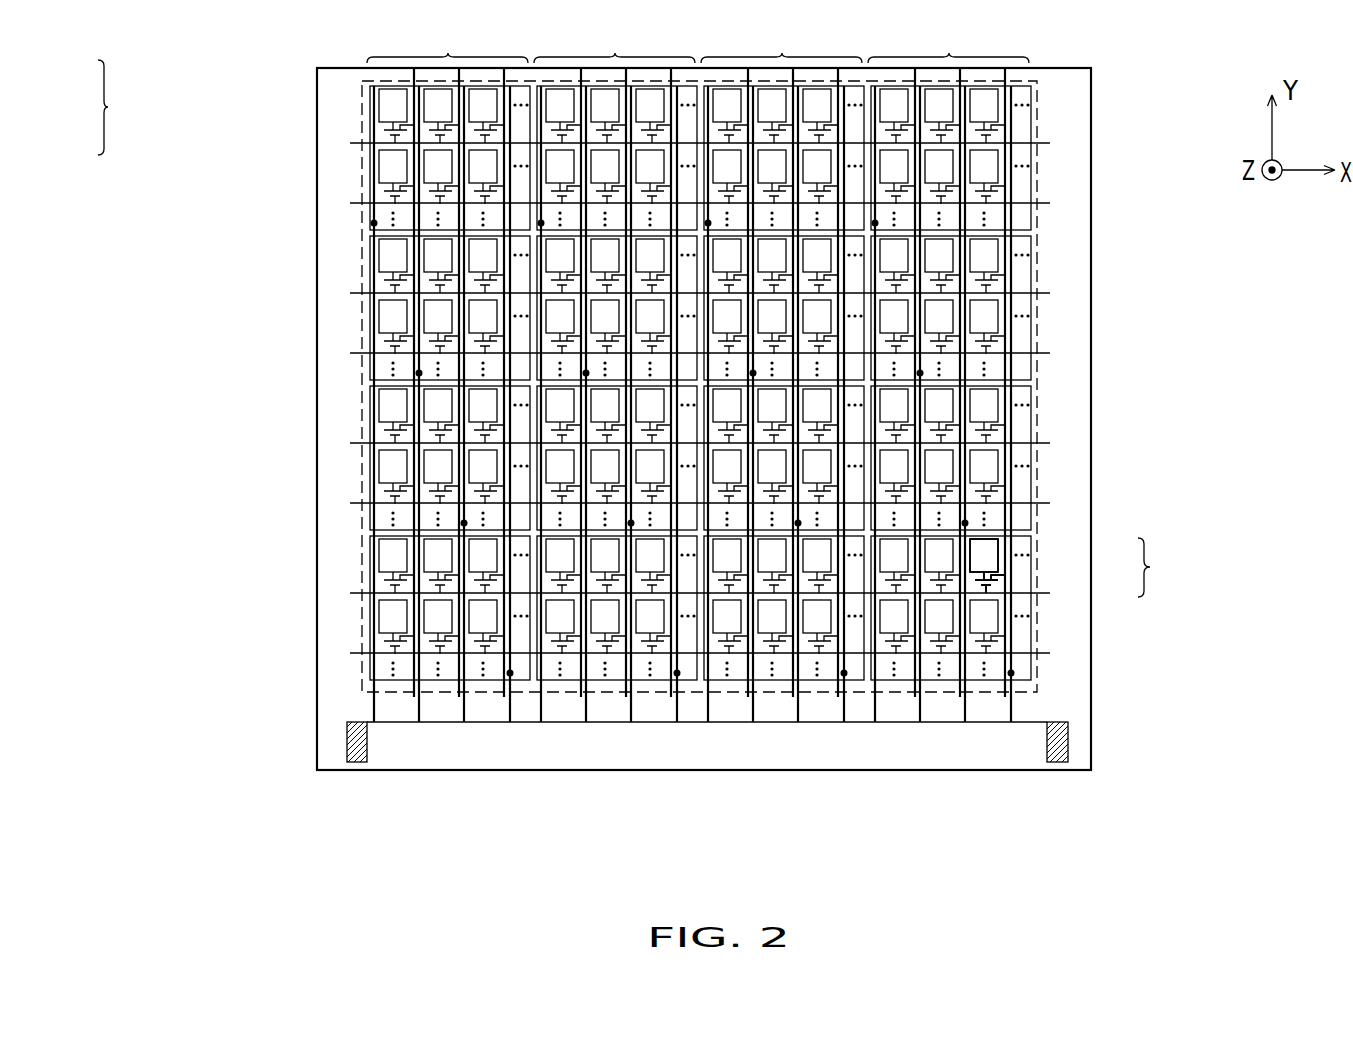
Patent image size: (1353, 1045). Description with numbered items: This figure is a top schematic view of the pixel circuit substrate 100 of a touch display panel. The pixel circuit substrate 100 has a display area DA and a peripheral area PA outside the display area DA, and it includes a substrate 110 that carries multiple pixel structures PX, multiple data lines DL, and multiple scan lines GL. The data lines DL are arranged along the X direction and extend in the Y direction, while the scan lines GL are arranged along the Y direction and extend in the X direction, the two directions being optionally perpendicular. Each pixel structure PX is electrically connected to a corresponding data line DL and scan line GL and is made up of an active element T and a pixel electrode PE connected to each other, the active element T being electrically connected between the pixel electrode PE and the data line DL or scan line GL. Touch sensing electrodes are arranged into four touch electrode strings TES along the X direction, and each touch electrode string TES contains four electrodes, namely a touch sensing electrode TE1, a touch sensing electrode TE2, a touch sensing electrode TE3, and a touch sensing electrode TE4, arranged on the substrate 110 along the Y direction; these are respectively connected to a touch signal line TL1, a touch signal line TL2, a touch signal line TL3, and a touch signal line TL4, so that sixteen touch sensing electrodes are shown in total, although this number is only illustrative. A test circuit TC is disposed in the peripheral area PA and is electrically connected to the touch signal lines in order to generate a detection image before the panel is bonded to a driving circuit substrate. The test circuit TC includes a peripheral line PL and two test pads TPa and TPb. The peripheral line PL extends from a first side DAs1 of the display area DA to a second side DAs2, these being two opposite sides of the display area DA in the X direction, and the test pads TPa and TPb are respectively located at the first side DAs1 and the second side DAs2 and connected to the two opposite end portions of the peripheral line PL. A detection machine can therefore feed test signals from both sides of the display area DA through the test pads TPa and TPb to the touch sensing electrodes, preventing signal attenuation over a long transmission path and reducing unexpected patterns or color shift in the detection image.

The pixel circuit substrate 100 is at (1283, 817).
The substrate 110 is at (1091, 330).
The peripheral area PA is at (1086, 104).
The display area DA is at (1040, 82).
The first side of the display area DAs1 is at (330, 114).
The second side of the display area DAs2 is at (1074, 252).
The touch sensing electrode TE1 is at (370, 183).
The touch sensing electrode TE2 is at (370, 317).
The touch sensing electrode TE3 is at (370, 465).
The touch sensing electrode TE4 is at (370, 580).
The touch electrode string TES is at (698, 44).
The scan line GL is at (1050, 503).
The data line DL is at (1005, 687).
The touch signal line TL1 is at (375, 715).
The touch signal line TL2 is at (419, 715).
The touch signal line TL3 is at (465, 715).
The touch signal line TL4 is at (510, 715).
The peripheral line PL is at (980, 725).
The test pad TPa is at (358, 749).
The test pad TPb is at (1060, 747).
The test circuit TC is at (98, 107).
The pixel electrode PE is at (998, 555).
The active element T is at (1013, 590).
The pixel structure PX is at (1076, 567).